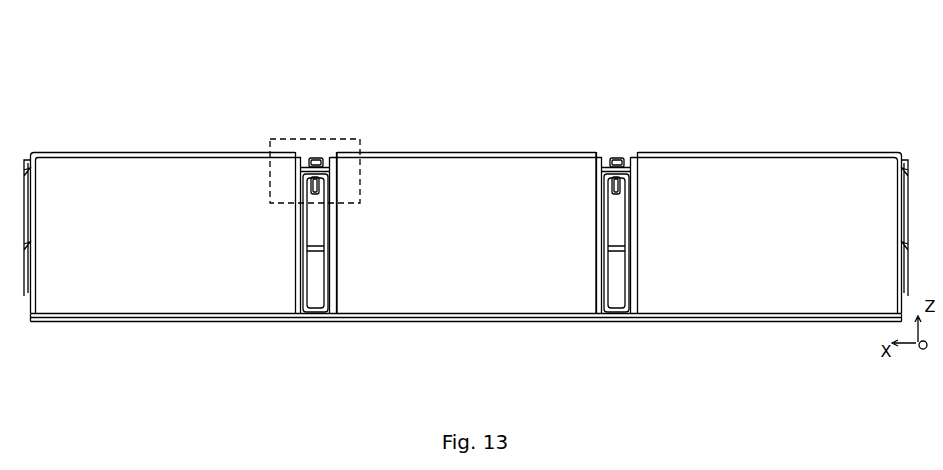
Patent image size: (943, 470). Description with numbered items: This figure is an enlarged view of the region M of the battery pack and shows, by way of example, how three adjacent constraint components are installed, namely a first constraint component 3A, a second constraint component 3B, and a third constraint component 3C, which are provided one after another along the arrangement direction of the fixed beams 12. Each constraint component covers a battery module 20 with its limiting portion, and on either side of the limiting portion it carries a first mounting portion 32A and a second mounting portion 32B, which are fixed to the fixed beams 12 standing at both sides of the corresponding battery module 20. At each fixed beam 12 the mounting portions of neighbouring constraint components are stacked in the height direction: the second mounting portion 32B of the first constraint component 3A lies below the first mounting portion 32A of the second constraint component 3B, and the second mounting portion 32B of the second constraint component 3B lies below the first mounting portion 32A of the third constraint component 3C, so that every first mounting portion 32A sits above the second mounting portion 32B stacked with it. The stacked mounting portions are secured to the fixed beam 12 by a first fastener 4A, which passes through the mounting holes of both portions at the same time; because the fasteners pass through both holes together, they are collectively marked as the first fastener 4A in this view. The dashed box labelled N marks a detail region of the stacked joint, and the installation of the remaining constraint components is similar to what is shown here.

The enlarged view region M is at (466, 213).
The first constraint component 3A is at (140, 150).
The second constraint component 3B is at (483, 150).
The third constraint component 3C is at (790, 150).
The battery module 20 is at (155, 302).
The fixed beam 12 is at (313, 302).
The first mounting portion 32A is at (332, 152).
The second mounting portion 32B is at (298, 152).
The first fastener 4A is at (615, 150).
The enlarged region N is at (270, 144).